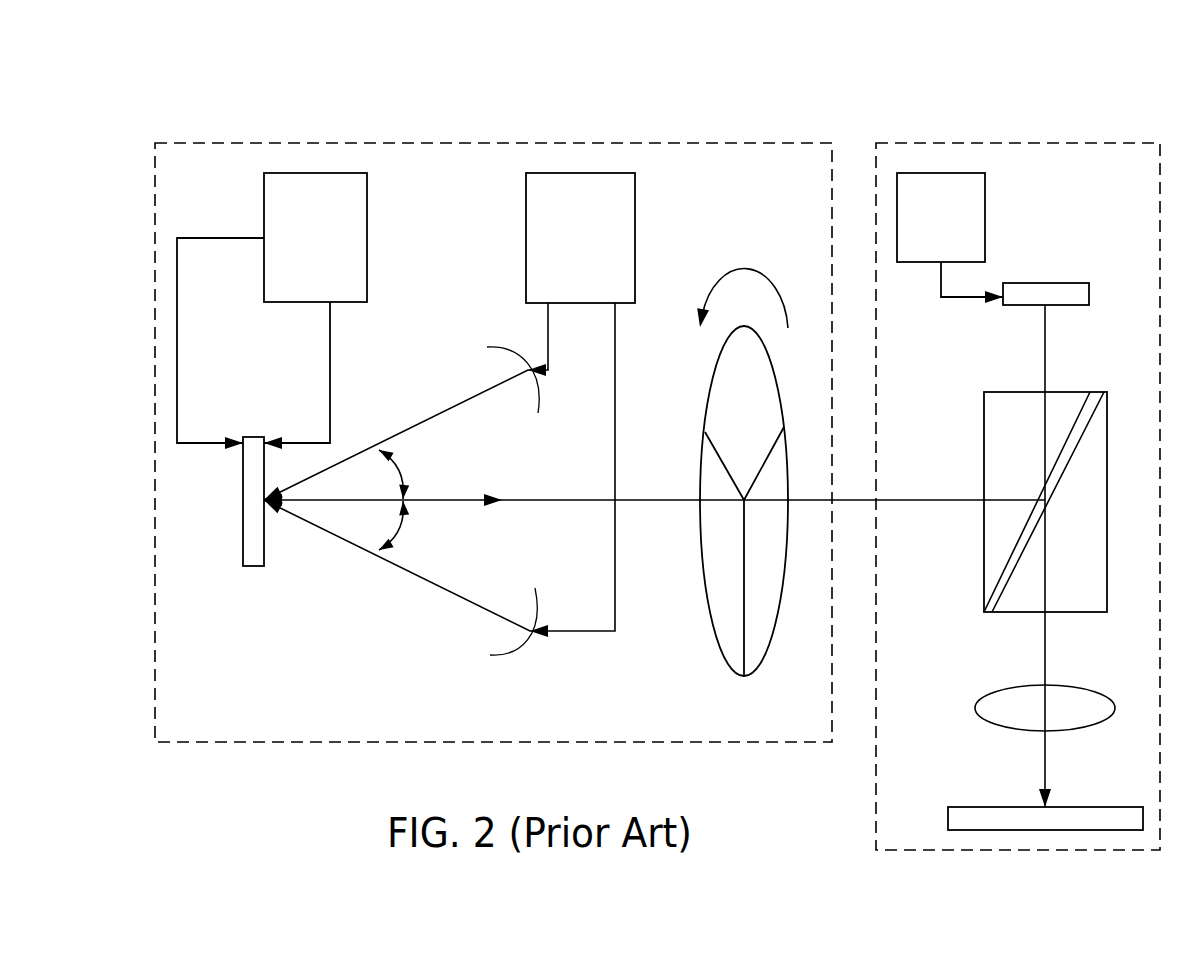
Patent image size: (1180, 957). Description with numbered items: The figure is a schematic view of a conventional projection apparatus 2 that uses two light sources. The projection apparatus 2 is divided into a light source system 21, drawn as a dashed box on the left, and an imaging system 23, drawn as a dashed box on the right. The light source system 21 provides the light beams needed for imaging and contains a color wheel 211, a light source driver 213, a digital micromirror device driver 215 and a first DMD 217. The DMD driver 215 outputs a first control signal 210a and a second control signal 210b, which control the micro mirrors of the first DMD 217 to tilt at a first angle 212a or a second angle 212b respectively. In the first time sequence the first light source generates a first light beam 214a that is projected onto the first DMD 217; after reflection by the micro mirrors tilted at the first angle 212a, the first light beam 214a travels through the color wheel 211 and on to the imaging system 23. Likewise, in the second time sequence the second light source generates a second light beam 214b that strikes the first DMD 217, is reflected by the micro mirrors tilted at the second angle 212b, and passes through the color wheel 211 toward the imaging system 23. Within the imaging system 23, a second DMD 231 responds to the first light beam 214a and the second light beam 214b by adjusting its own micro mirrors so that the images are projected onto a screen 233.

The projection apparatus 2 is at (609, 104).
The light source system 21 is at (367, 742).
The imaging system 23 is at (876, 749).
The first control signal 210a is at (332, 325).
The second control signal 210b is at (177, 347).
The color wheel 211 is at (720, 646).
The first angle 212a is at (423, 474).
The second angle 212b is at (423, 526).
The light source driver 213 is at (580, 238).
The first light beam 214a is at (435, 415).
The second light beam 214b is at (433, 587).
The digital micromirror device (DMD) driver 215 is at (315, 237).
The first DMD 217 is at (240, 522).
The second DMD 231 is at (1047, 283).
The screen 233 is at (993, 830).